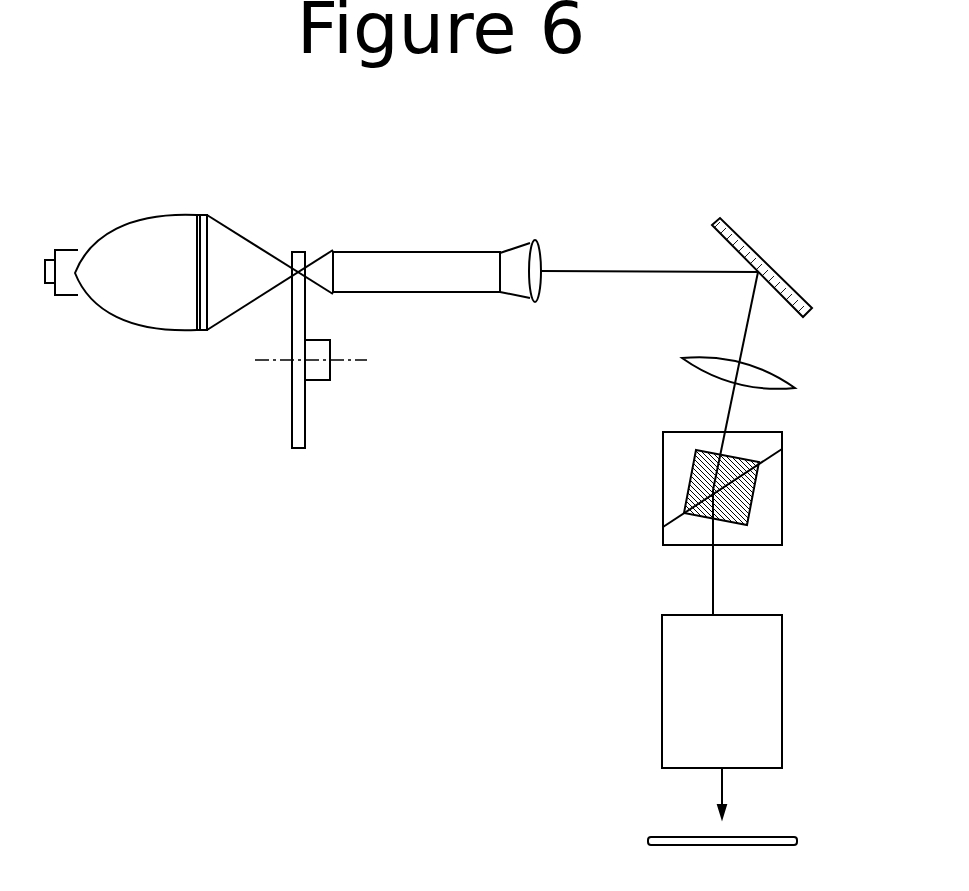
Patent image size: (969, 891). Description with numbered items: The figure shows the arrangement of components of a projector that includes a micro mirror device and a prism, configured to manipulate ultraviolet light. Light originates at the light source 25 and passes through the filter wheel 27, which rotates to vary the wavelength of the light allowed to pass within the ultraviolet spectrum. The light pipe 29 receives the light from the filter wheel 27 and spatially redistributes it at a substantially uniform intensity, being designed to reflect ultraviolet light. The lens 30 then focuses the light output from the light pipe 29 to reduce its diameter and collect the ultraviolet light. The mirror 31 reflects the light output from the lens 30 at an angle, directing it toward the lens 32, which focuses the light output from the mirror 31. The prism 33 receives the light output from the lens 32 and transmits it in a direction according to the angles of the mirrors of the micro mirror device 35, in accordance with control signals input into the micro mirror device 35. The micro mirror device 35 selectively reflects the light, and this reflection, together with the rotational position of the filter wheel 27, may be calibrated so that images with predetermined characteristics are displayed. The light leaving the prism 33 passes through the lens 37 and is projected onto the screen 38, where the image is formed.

The light source 25 is at (166, 213).
The filter wheel 27 is at (292, 432).
The light pipe 29 is at (412, 256).
The lens 30 is at (537, 242).
The mirror 31 is at (782, 275).
The lens 32 is at (775, 380).
The prism 33 is at (782, 442).
The micro mirror device 35 is at (755, 505).
The lens 37 is at (777, 690).
The screen 38 is at (797, 841).